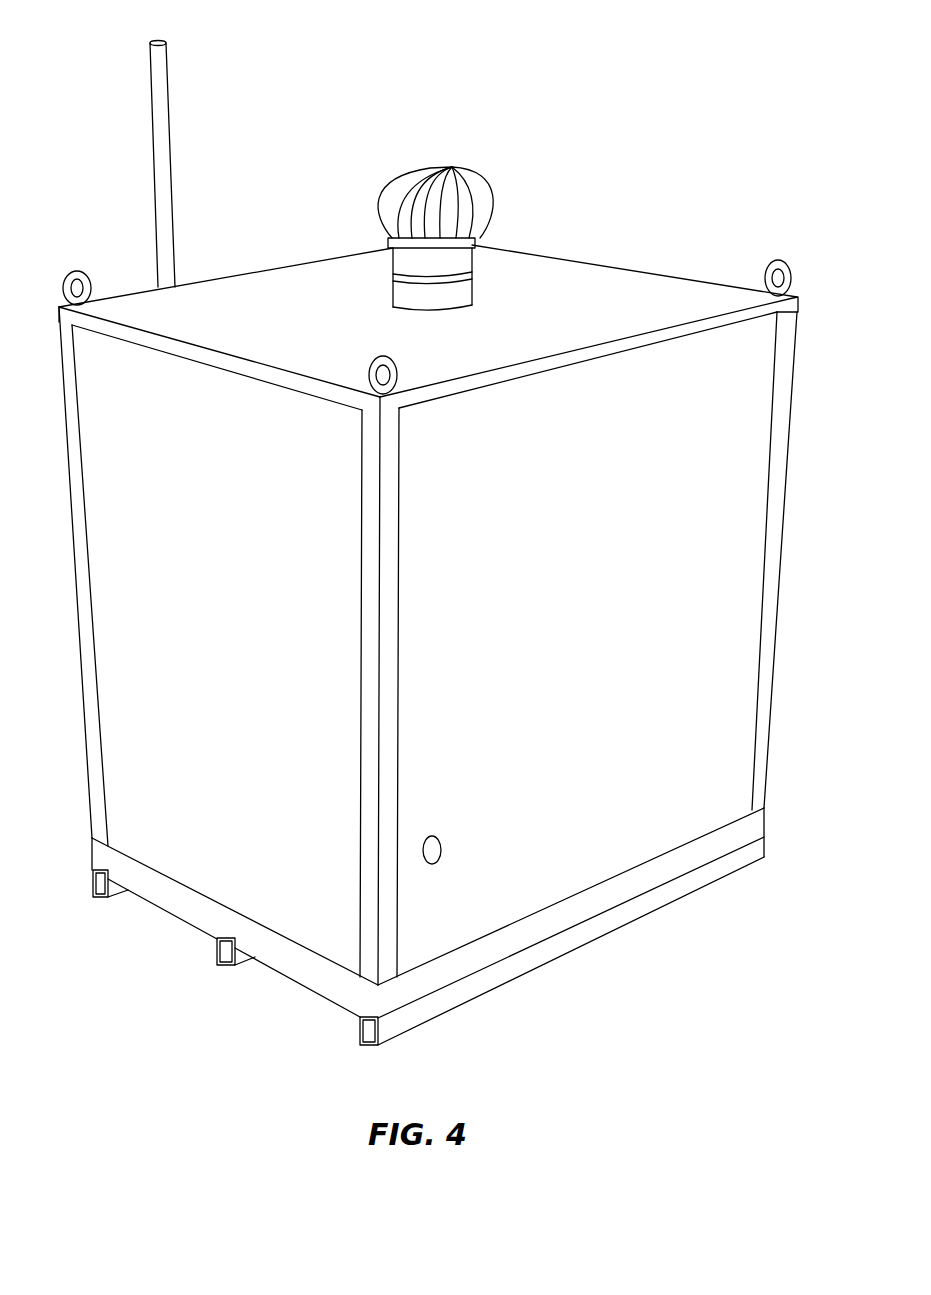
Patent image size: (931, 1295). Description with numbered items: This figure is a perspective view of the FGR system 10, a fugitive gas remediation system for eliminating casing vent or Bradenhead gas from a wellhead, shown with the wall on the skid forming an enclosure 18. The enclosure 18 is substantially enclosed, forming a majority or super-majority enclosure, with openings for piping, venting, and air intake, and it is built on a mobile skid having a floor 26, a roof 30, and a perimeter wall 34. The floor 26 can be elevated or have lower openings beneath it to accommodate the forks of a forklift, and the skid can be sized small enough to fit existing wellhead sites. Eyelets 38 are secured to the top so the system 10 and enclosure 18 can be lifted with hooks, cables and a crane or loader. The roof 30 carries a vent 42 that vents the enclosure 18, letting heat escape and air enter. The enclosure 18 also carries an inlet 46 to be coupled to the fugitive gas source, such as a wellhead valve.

The FGR system 10 is at (439, 589).
The enclosure 18 is at (740, 590).
The floor 26 is at (658, 888).
The roof 30 is at (568, 275).
The perimeter wall 34 is at (717, 697).
The eyelets 38 is at (72, 273).
The vent 42 is at (462, 178).
The inlet 46 is at (432, 865).